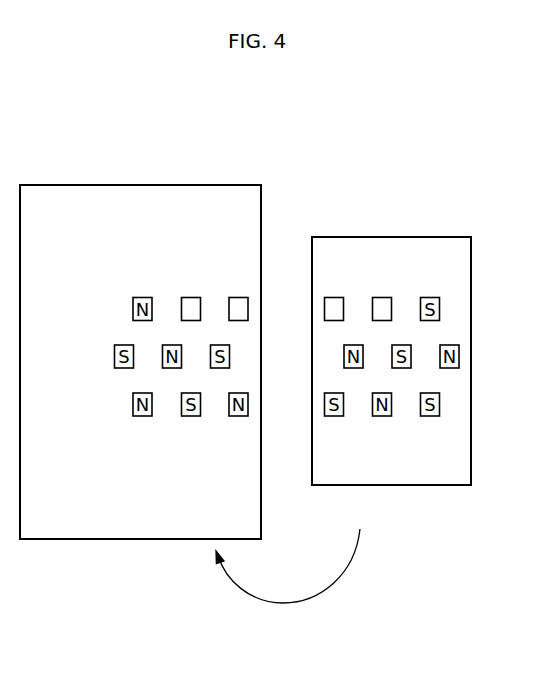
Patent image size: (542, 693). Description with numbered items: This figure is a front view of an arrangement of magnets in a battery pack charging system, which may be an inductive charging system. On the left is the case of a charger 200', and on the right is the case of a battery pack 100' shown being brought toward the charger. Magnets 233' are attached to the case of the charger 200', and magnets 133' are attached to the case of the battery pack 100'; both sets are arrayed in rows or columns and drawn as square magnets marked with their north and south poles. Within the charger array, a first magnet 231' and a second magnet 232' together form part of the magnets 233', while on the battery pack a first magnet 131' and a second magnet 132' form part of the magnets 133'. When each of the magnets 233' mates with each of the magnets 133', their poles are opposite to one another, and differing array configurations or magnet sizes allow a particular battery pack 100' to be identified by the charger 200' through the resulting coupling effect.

The charger 200' is at (140, 332).
The magnet of the charger 231' is at (183, 228).
The magnet of the charger 232' is at (248, 228).
The magnets 233' is at (214, 207).
The battery pack 100' is at (403, 337).
The magnet of the battery pack 131' is at (332, 254).
The magnet of the battery pack 132' is at (395, 254).
The magnets 133' is at (364, 233).